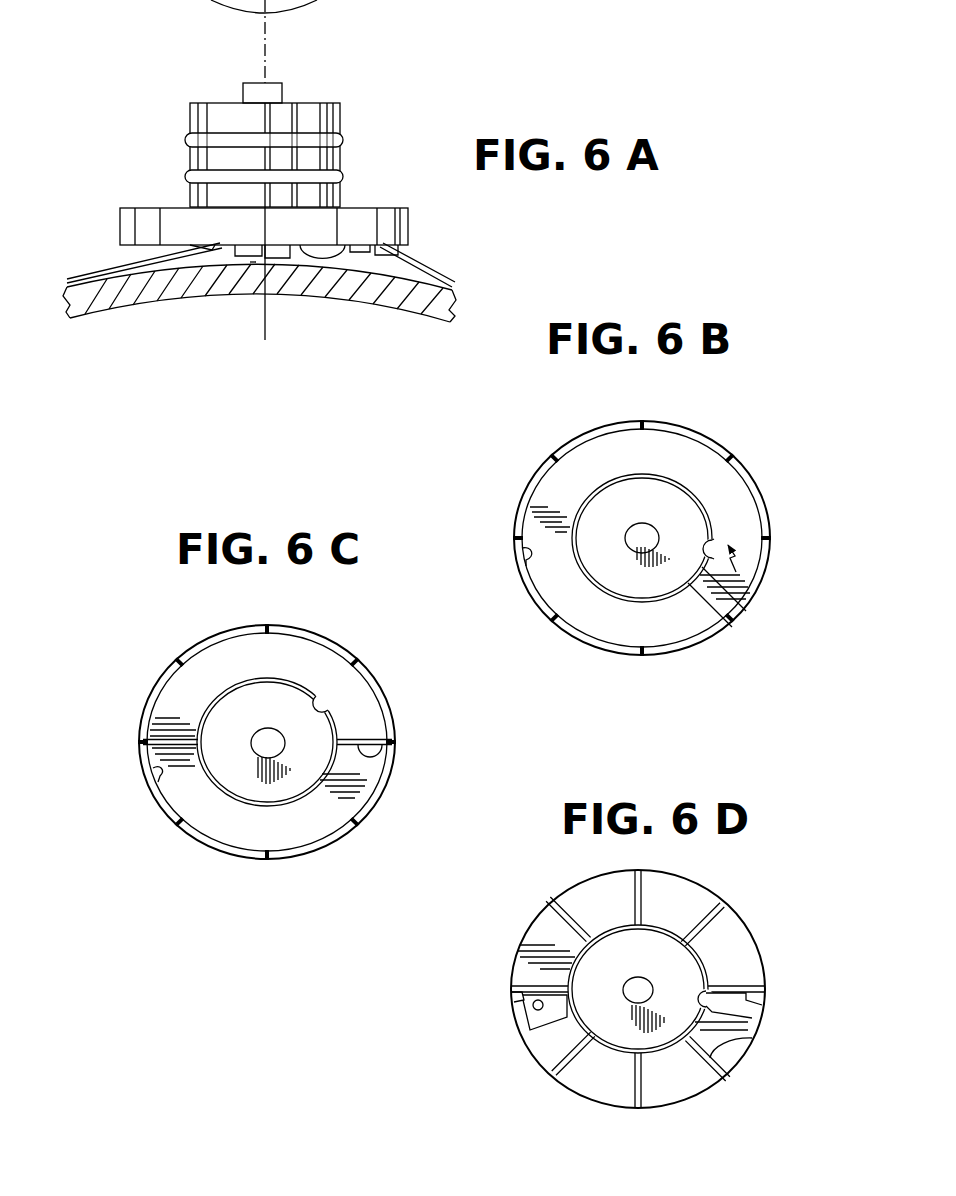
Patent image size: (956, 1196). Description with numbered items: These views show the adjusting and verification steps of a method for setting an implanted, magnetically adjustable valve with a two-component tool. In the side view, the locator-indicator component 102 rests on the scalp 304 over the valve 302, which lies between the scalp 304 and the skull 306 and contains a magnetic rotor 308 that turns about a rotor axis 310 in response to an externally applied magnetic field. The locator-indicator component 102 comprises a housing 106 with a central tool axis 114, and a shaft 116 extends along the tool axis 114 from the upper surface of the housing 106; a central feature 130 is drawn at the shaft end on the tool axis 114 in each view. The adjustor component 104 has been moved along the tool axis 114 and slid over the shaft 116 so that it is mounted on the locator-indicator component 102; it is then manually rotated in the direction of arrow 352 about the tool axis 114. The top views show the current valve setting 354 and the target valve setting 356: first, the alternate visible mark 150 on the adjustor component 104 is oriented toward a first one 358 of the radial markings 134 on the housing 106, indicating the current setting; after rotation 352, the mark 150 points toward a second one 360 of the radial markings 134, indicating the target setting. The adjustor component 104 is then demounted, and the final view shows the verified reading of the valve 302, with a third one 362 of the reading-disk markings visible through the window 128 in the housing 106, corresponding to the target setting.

In FIG. 6A, the locator-indicator component 102 is at (178, 147).
In FIG. 6B, the adjustor component 104 is at (587, 457).
In FIG. 6C, the adjustor component 104 is at (303, 655).
In FIG. 6A, the housing 106 is at (120, 228).
In FIG. 6B, the housing 106 is at (533, 488).
In FIG. 6C, the housing 106 is at (218, 843).
In FIG. 6D, the housing 106 is at (725, 933).
In FIG. 6A, the tool axis 114 is at (265, 30).
In FIG. 6A, the shaft 116 is at (328, 115).
In FIG. 6B, the shaft 116 is at (683, 523).
In FIG. 6C, the shaft 116 is at (317, 727).
In FIG. 6D, the shaft 116 is at (620, 1037).
In FIG. 6B, the window 128 is at (522, 552).
In FIG. 6C, the window 128 is at (153, 770).
In FIG. 6D, the window 128 is at (512, 998).
In FIG. 6A, the center hole / post 130 is at (243, 93).
In FIG. 6B, the center hole / post 130 is at (647, 532).
In FIG. 6C, the center hole / post 130 is at (273, 750).
In FIG. 6D, the center hole / post 130 is at (635, 980).
In FIG. 6D, the radial markings 134 is at (748, 1003).
In FIG. 6B, the alternate visible mark 150 is at (713, 600).
In FIG. 6C, the alternate visible mark 150 is at (361, 750).
In FIG. 6A, the valve 302 is at (333, 260).
In FIG. 6A, the scalp 304 is at (427, 268).
In FIG. 6A, the skull 306 is at (105, 303).
In FIG. 6A, the magnetic rotor 308 is at (253, 265).
In FIG. 6A, the rotor axis 310 is at (266, 317).
In FIG. 6A, the arrow indicating direction of rotation 352 is at (293, 5).
In FIG. 6B, the arrow indicating direction of rotation 352 is at (763, 572).
In FIG. 6B, the current valve setting 354 is at (716, 432).
In FIG. 6C, the target valve setting 356 is at (190, 647).
In FIG. 6B, the first one of the radial markings 358 is at (743, 612).
In FIG. 6C, the second one of the radial markings 360 is at (393, 737).
In FIG. 6D, the third one of the plurality of markings 362 is at (537, 1007).